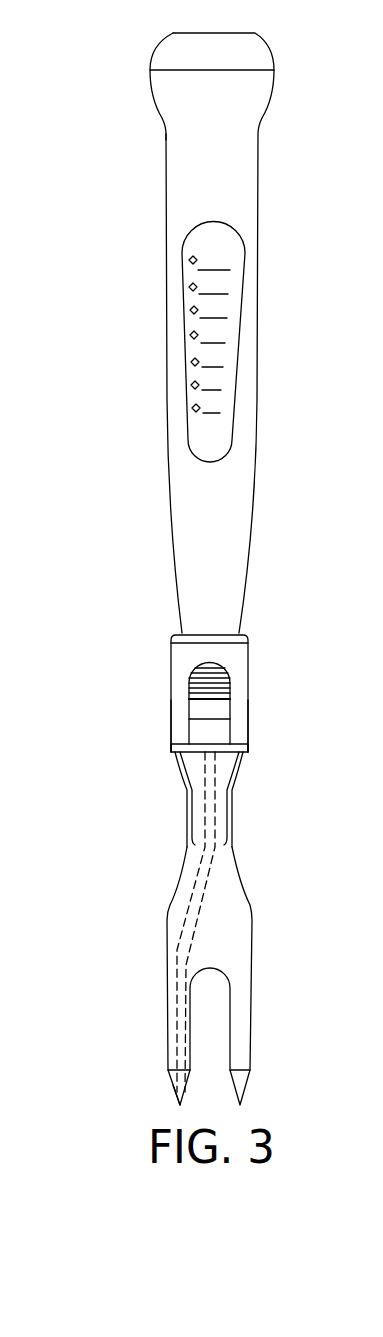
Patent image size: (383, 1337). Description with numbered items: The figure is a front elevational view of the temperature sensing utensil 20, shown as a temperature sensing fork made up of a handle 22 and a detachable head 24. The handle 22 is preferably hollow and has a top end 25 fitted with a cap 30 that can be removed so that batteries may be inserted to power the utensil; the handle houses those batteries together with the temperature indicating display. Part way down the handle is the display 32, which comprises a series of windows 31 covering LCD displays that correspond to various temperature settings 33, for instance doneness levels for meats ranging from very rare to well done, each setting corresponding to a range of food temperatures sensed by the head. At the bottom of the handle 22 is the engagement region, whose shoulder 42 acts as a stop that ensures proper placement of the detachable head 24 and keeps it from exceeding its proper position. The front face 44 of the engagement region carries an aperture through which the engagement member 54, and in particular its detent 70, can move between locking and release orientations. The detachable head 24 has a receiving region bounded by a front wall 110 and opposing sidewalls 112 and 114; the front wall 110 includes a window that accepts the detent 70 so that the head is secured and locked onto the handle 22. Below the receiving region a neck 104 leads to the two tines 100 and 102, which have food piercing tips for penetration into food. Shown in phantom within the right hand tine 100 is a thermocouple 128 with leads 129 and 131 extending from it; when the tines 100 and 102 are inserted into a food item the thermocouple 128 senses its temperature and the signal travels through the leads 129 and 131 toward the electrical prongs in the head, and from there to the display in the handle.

The temperature sensing utensil 20 is at (100, 92).
The handle 22 is at (166, 367).
The detachable head 24 is at (166, 917).
The top end 25 is at (265, 112).
The cap 30 is at (268, 48).
The windows 31 is at (190, 263).
The display 32 is at (228, 249).
The temperature settings 33 is at (227, 268).
The shoulder 42 is at (247, 633).
The front face 44 is at (220, 735).
The engagement member 54 is at (194, 699).
The detent 70 is at (218, 680).
The tine 100 is at (172, 1038).
The tine 102 is at (242, 1060).
The neck 104 is at (188, 805).
The front wall 110 is at (185, 653).
The sidewall 112 is at (170, 737).
The sidewall 114 is at (248, 723).
The thermocouple 128 is at (178, 1090).
The lead 129 is at (173, 952).
The lead 131 is at (207, 913).